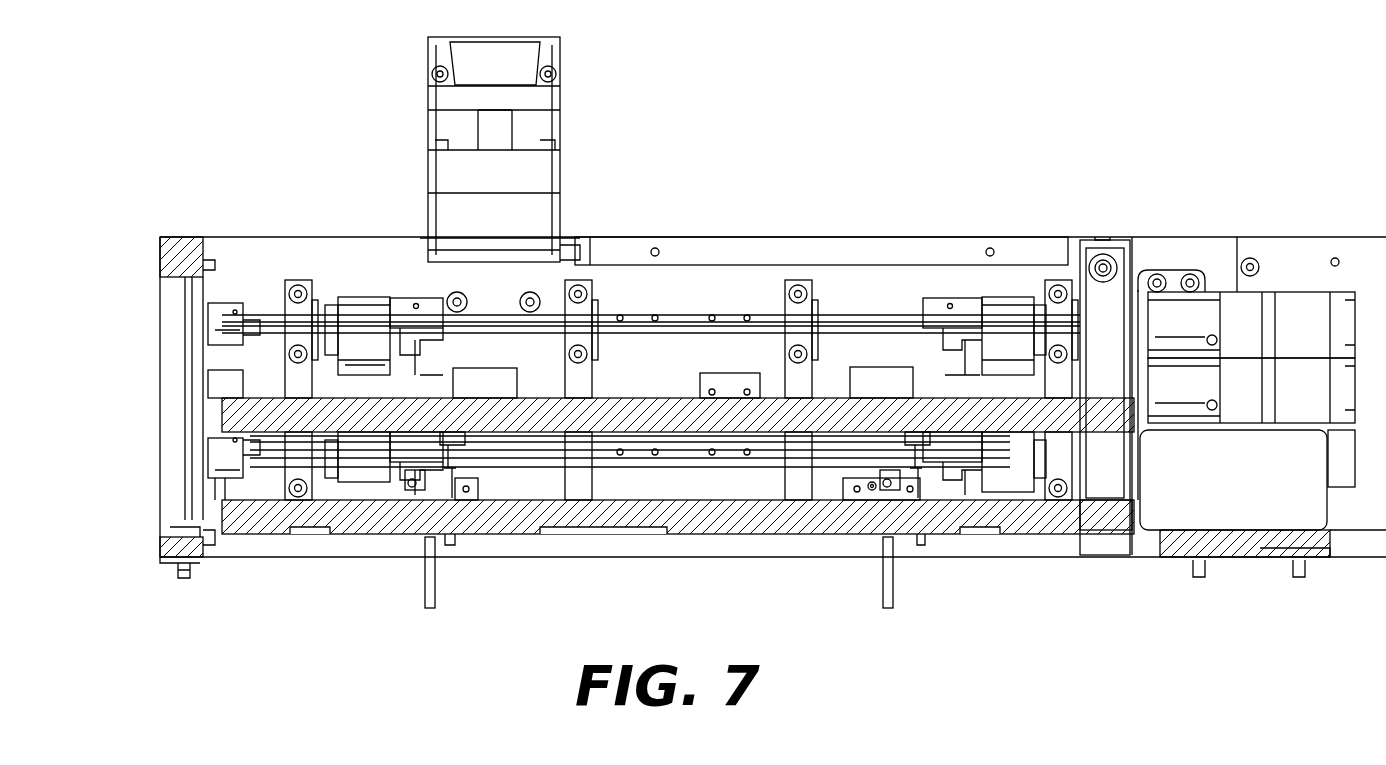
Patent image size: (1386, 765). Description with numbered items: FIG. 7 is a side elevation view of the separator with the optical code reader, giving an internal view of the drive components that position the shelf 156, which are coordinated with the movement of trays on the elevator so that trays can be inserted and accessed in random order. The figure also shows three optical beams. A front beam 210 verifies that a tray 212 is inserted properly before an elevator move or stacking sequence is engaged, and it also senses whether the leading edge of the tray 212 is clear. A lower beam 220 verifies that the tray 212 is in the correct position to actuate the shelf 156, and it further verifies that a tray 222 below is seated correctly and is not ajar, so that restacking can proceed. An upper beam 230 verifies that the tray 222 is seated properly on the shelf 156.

The shelf 156 is at (690, 437).
The front beam 210 is at (222, 428).
The tray 212 is at (736, 413).
The lower beam 220 is at (433, 497).
The tray 222 is at (943, 518).
The upper beam 230 is at (452, 430).